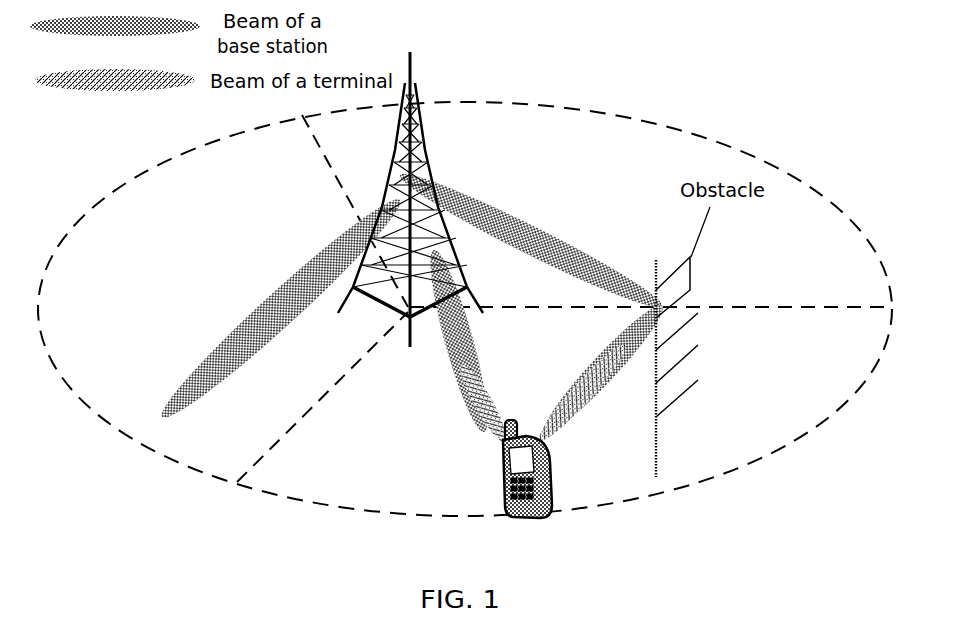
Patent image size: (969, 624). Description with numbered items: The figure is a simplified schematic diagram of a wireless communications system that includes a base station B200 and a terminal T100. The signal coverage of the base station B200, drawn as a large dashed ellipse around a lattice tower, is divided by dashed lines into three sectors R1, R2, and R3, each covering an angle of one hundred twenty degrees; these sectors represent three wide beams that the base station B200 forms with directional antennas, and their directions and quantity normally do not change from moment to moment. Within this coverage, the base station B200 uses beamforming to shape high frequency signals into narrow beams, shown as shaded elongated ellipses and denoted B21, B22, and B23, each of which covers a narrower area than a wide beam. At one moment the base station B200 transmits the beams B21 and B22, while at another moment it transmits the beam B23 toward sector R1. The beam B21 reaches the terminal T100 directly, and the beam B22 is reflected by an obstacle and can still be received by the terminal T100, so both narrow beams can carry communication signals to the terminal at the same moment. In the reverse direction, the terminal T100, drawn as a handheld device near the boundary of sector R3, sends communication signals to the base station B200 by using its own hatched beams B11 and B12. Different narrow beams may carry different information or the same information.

The base station B200 is at (410, 183).
The narrow beam B21 is at (458, 340).
The narrow beam B22 is at (533, 301).
The narrow beam B23 is at (281, 308).
The beam B11 is at (487, 404).
The beam B12 is at (583, 392).
The terminal T100 is at (526, 488).
The sector R1 is at (291, 211).
The sector R2 is at (650, 228).
The sector R3 is at (322, 397).